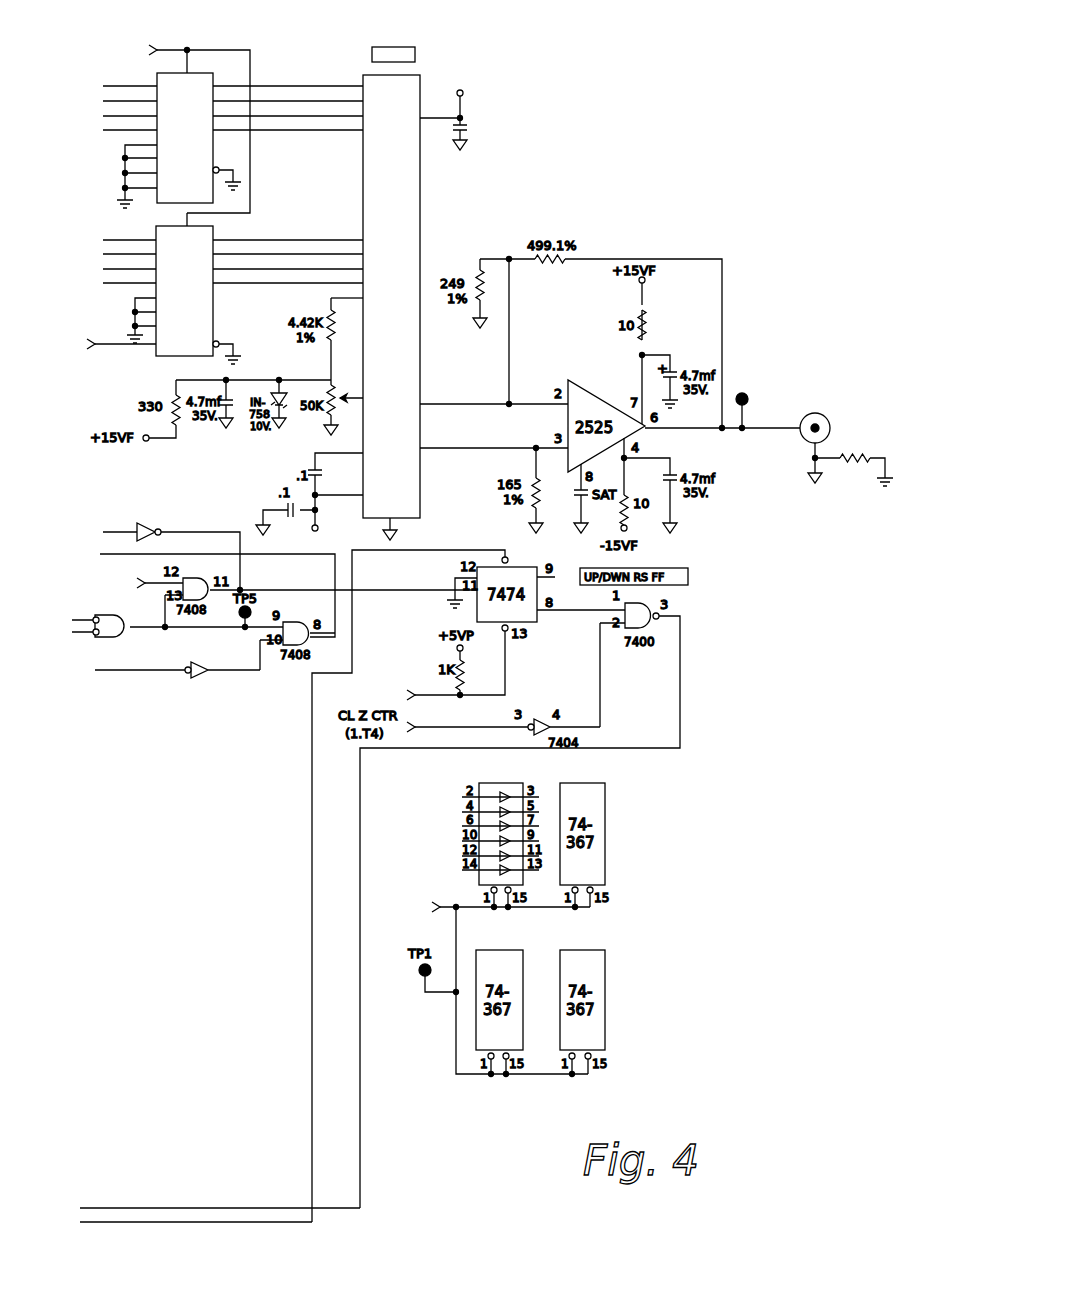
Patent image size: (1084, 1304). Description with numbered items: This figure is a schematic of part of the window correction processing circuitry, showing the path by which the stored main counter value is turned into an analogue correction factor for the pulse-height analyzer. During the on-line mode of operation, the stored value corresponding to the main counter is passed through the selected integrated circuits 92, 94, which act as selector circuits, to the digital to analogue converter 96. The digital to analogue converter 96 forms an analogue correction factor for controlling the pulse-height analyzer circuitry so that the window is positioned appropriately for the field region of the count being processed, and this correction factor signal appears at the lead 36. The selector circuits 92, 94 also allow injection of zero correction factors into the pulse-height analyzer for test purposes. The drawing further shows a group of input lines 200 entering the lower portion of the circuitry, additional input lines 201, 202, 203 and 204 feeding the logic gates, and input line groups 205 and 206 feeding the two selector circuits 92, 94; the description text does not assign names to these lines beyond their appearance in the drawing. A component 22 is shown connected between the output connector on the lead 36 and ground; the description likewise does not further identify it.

The selector circuit 92 is at (215, 150).
The selector circuit 94 is at (215, 300).
The digital to analogue converter 96 is at (422, 202).
The input bus lines 200 is at (77, 1200).
The input line to 7404 inverter 201 is at (108, 673).
The input lines to 7400 NAND gate 202 is at (72, 610).
The signal line 203 is at (100, 560).
The signal line to 7404 inverter 204 is at (104, 525).
The input data lines to second multiplexer 205 is at (100, 232).
The input data lines to first multiplexer 206 is at (100, 78).
The lead 36 is at (768, 430).
The output termination resistor 22 is at (854, 461).